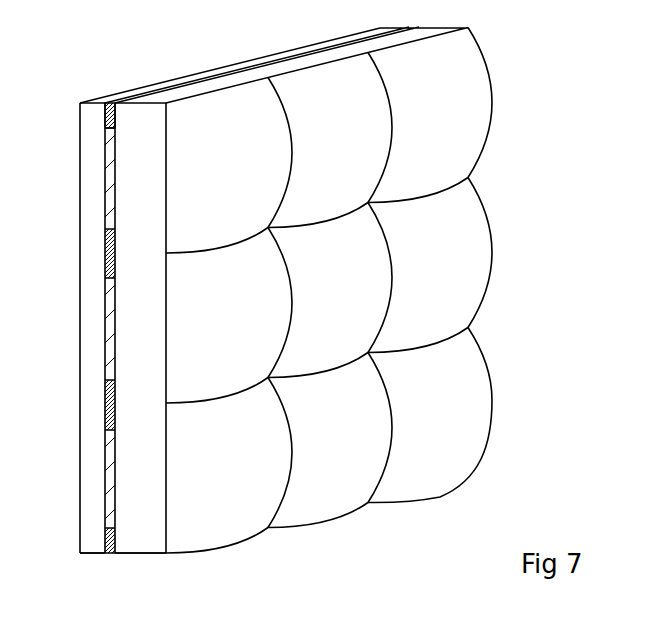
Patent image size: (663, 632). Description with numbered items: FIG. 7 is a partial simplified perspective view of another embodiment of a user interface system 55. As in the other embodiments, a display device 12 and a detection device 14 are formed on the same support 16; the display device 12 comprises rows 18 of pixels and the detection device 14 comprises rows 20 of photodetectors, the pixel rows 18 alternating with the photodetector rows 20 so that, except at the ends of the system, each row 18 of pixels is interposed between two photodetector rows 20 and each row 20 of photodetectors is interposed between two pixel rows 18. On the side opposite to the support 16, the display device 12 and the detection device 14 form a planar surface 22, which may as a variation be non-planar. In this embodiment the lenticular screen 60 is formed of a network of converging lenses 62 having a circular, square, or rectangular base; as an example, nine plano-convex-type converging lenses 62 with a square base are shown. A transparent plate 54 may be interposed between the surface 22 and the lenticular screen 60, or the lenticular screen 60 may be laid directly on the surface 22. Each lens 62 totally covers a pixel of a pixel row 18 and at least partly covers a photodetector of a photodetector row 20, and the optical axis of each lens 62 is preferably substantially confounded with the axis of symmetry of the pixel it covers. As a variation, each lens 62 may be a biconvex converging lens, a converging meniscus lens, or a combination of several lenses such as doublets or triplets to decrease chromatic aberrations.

The display device 12 is at (100, 453).
The detection device 14 is at (99, 546).
The support 16 is at (94, 104).
The rows of pixels 18 is at (110, 155).
The rows of photodetectors 20 is at (105, 117).
The planar surface 22 is at (113, 113).
The transparent plate 54 is at (184, 90).
The user interface system 55 is at (560, 127).
The lenticular screen 60 is at (134, 563).
The converging lenses 62 is at (230, 113).